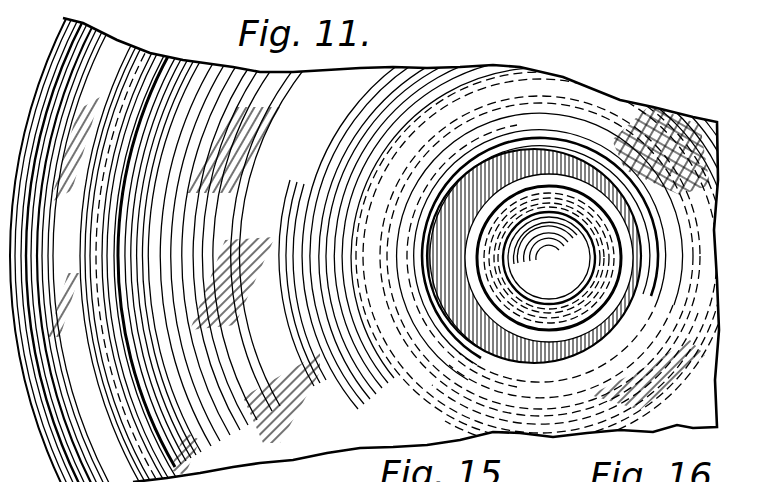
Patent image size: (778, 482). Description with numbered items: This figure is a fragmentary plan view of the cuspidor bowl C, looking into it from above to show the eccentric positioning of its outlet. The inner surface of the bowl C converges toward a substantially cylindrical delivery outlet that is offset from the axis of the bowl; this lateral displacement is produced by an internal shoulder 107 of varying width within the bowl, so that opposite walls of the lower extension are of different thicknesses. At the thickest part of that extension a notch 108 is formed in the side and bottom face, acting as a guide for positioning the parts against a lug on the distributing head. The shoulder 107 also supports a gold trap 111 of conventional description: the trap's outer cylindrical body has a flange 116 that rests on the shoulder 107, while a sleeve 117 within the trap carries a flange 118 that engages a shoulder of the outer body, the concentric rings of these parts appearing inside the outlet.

The cuspidor bowl C is at (394, 241).
The internal shoulder 107 is at (463, 290).
The notch 108 is at (410, 292).
The gold trap 111 is at (533, 248).
The flange 116 is at (503, 323).
The sleeve 117 is at (572, 295).
The flange 118 is at (608, 237).